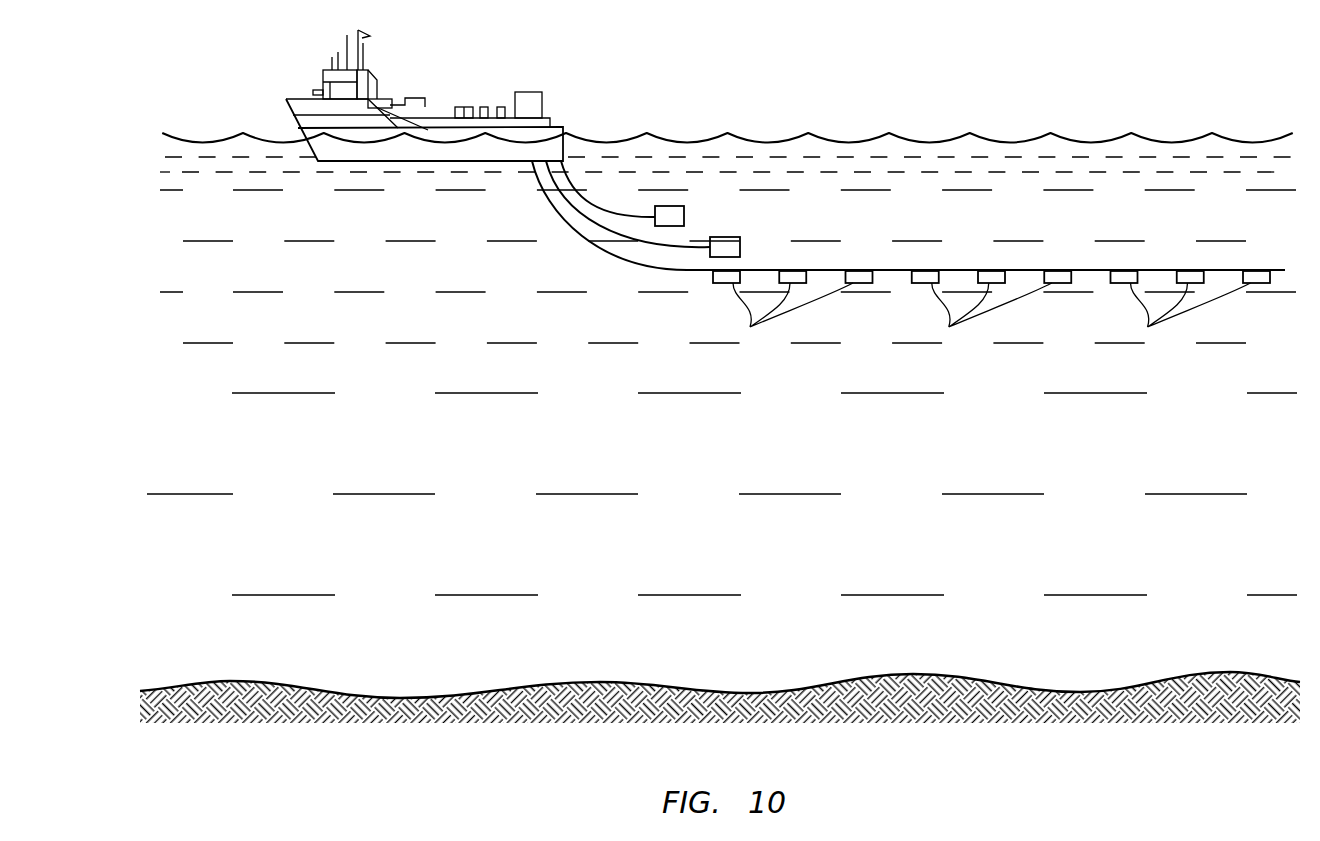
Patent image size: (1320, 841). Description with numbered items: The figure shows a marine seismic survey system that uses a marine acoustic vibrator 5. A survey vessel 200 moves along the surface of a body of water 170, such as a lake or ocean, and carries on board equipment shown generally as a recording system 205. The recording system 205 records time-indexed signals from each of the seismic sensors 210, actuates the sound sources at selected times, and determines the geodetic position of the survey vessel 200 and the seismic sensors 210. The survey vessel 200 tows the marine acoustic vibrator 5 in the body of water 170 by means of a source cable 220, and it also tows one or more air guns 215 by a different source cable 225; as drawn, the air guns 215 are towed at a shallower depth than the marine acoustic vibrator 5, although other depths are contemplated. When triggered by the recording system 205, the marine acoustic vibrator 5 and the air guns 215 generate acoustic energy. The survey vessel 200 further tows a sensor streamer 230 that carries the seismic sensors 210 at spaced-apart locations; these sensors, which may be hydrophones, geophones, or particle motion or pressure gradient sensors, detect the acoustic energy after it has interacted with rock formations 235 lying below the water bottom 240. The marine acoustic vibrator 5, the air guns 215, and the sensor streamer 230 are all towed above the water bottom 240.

The marine acoustic vibrator 5 is at (741, 248).
The body of water 170 is at (378, 281).
The survey vessel 200 is at (564, 140).
The recording system 205 is at (528, 92).
The seismic sensors 210 is at (1126, 355).
The air guns 215 is at (672, 206).
The source cable 220 is at (565, 208).
The different source cable 225 is at (610, 205).
The sensor streamer 230 is at (943, 270).
The rock formations 235 is at (1199, 764).
The water bottom 240 is at (1140, 684).